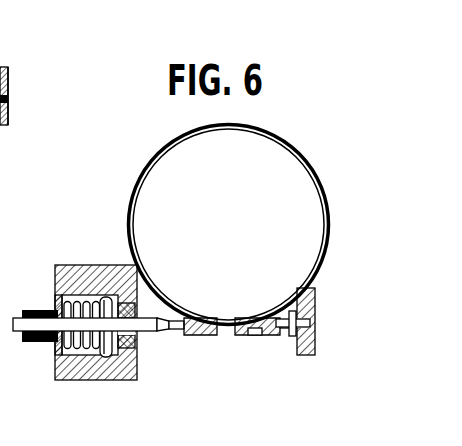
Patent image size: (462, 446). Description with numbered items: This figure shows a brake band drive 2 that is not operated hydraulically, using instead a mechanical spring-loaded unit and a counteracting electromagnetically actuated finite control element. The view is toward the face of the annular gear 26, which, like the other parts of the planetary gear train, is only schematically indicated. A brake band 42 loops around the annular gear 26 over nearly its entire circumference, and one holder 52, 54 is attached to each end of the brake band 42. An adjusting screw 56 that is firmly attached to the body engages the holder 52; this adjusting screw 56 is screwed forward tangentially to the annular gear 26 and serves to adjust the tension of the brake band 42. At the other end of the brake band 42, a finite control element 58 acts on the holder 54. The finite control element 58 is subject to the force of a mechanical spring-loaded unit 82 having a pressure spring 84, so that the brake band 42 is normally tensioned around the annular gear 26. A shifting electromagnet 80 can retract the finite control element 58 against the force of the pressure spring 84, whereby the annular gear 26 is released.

The apparatus 2 is at (27, 205).
The annular gear 26 is at (273, 158).
The brake band 42 is at (312, 143).
The holder 52 is at (244, 334).
The holder 54 is at (198, 334).
The adjusting screw 56 is at (318, 325).
The finite control element 58 is at (151, 334).
The shifting electromagnet 80 is at (44, 310).
The mechanical spring-loaded unit 82 is at (96, 254).
The pressure spring 84 is at (62, 353).